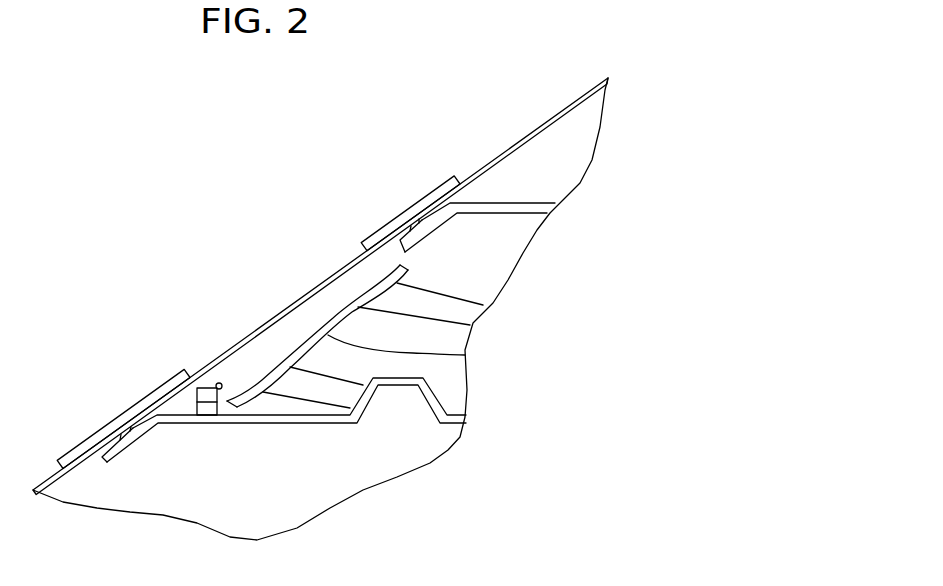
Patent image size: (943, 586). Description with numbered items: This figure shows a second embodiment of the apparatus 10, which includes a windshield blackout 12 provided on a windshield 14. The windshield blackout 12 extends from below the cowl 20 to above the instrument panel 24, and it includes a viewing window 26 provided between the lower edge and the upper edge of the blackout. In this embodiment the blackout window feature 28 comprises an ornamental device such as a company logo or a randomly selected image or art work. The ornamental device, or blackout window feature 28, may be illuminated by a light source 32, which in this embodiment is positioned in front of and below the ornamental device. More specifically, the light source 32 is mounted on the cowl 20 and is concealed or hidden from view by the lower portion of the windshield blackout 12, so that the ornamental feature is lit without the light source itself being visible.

The apparatus 10 is at (170, 202).
The windshield blackout 12 is at (402, 210).
The windshield 14 is at (550, 118).
The cowl 20 is at (293, 420).
The instrument panel 24 is at (518, 205).
The viewing window 26 is at (268, 308).
The blackout window feature 28 is at (465, 355).
The light source 32 is at (200, 394).